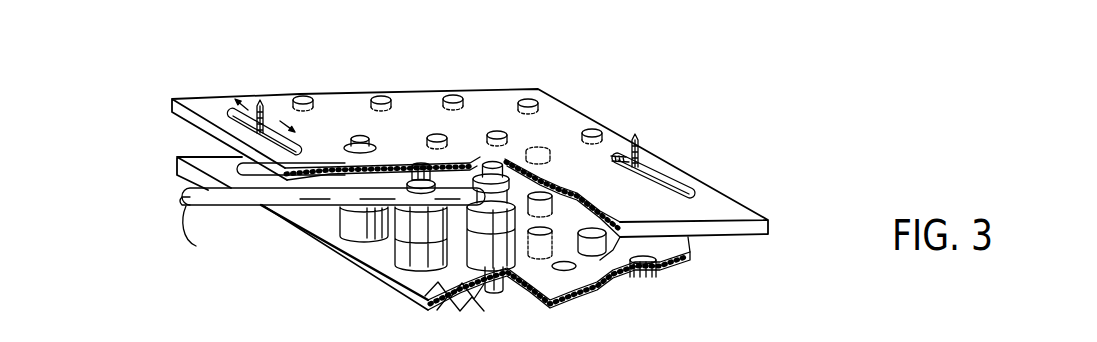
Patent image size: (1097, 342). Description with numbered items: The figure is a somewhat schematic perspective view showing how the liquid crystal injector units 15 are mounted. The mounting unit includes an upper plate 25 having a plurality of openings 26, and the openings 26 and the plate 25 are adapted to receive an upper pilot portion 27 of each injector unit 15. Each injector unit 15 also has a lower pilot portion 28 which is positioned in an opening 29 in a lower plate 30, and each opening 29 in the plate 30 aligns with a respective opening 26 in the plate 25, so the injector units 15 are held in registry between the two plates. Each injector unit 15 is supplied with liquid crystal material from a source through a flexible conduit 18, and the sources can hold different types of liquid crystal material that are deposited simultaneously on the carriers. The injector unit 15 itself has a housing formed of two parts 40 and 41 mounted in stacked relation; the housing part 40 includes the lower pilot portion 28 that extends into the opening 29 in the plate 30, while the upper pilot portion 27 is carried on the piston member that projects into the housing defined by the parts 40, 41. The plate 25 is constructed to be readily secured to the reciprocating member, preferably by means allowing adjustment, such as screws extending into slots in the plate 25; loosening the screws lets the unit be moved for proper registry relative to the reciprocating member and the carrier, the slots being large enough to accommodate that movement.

The liquid crystal injector unit 15 is at (391, 251).
The flexible conduit 18 is at (255, 168).
The plate 25 is at (407, 100).
The openings 26 is at (378, 96).
The upper pilot portion 27 is at (368, 137).
The lower pilot portion 28 is at (494, 292).
The opening 29 is at (656, 280).
The plate 30 is at (692, 251).
The housing part 40 is at (345, 227).
The housing part 41 is at (340, 180).